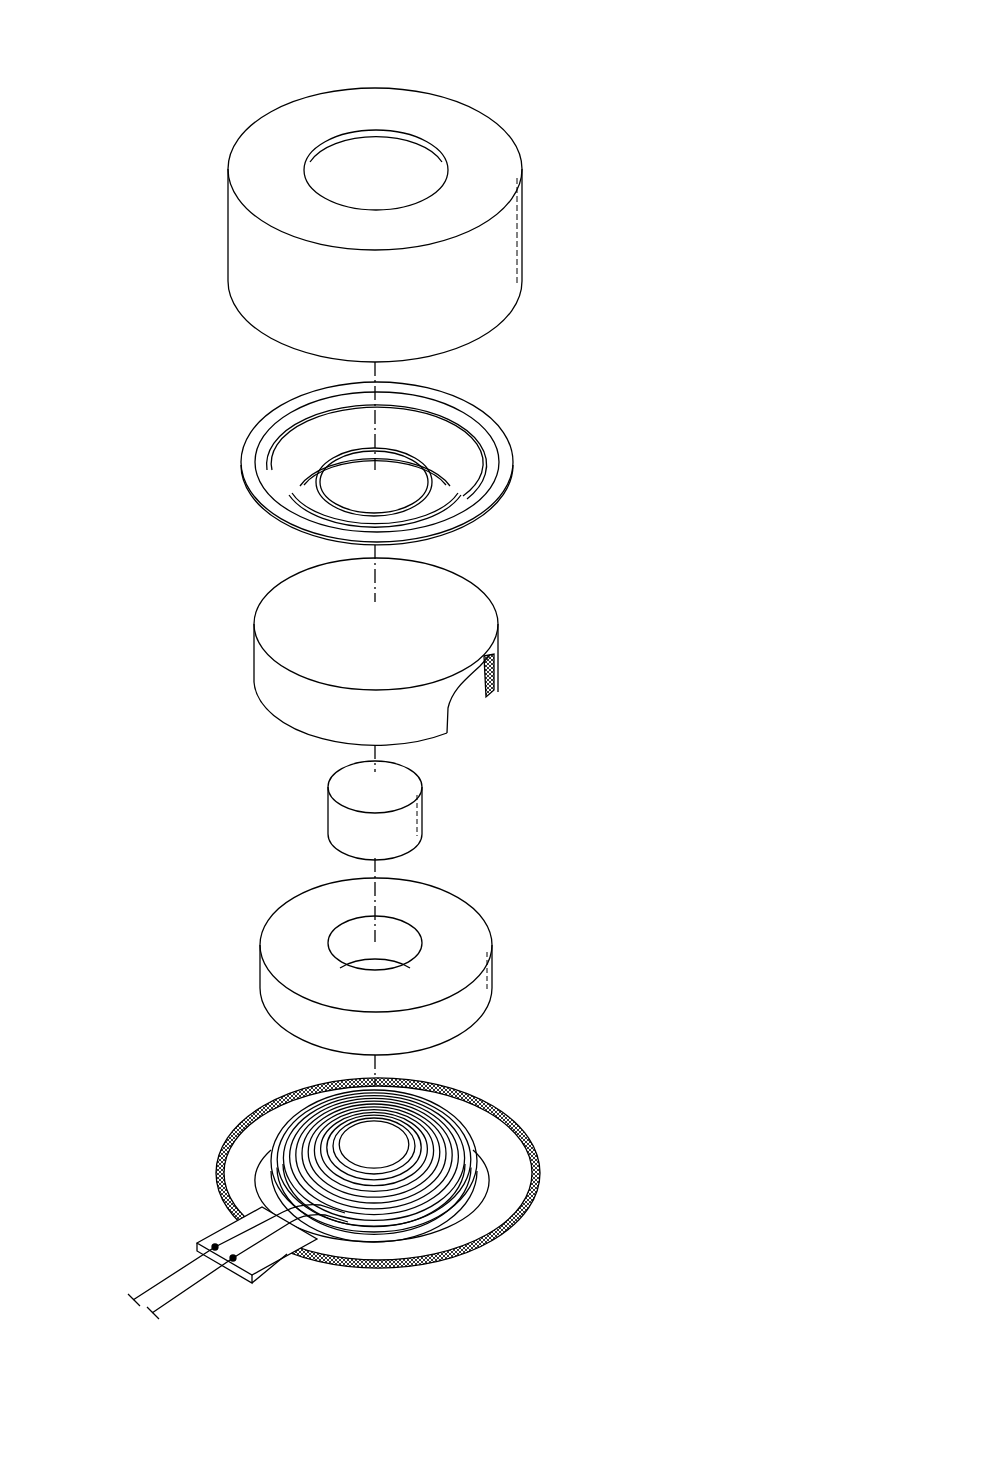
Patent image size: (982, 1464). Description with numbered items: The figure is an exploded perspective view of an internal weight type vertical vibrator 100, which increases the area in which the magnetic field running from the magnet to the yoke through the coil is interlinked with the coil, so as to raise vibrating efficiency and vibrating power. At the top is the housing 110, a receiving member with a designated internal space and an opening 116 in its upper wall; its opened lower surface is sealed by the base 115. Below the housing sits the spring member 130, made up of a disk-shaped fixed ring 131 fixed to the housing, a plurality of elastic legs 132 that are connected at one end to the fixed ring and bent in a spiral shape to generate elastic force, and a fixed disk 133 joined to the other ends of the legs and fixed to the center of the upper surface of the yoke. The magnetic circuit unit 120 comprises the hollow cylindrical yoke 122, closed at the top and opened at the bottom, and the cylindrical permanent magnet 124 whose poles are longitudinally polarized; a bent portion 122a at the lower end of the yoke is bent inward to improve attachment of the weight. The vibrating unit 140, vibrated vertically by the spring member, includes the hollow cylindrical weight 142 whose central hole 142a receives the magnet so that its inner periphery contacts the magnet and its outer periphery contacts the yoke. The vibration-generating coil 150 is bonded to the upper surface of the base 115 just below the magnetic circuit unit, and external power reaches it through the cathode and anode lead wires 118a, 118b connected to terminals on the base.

The internal weight type vertical vibrator 100 is at (657, 109).
The housing 110 is at (247, 236).
The opening of case 116 is at (374, 133).
The spring member 130 is at (201, 414).
The fixed ring 131 is at (252, 468).
The elastic legs 132 is at (295, 490).
The fixed disk 133 is at (393, 484).
The magnetic circuit unit 120 is at (139, 748).
The yoke 122 is at (278, 637).
The bent portion 122a is at (495, 678).
The magnet 124 is at (340, 780).
The vibrating unit 140 is at (532, 862).
The weight 142 is at (440, 900).
The central hole 142a is at (407, 945).
The base 115 is at (481, 1213).
The vibration-generating coil 150 is at (455, 1115).
The cathode lead wire 118a is at (195, 1283).
The anode lead wire 118b is at (175, 1272).